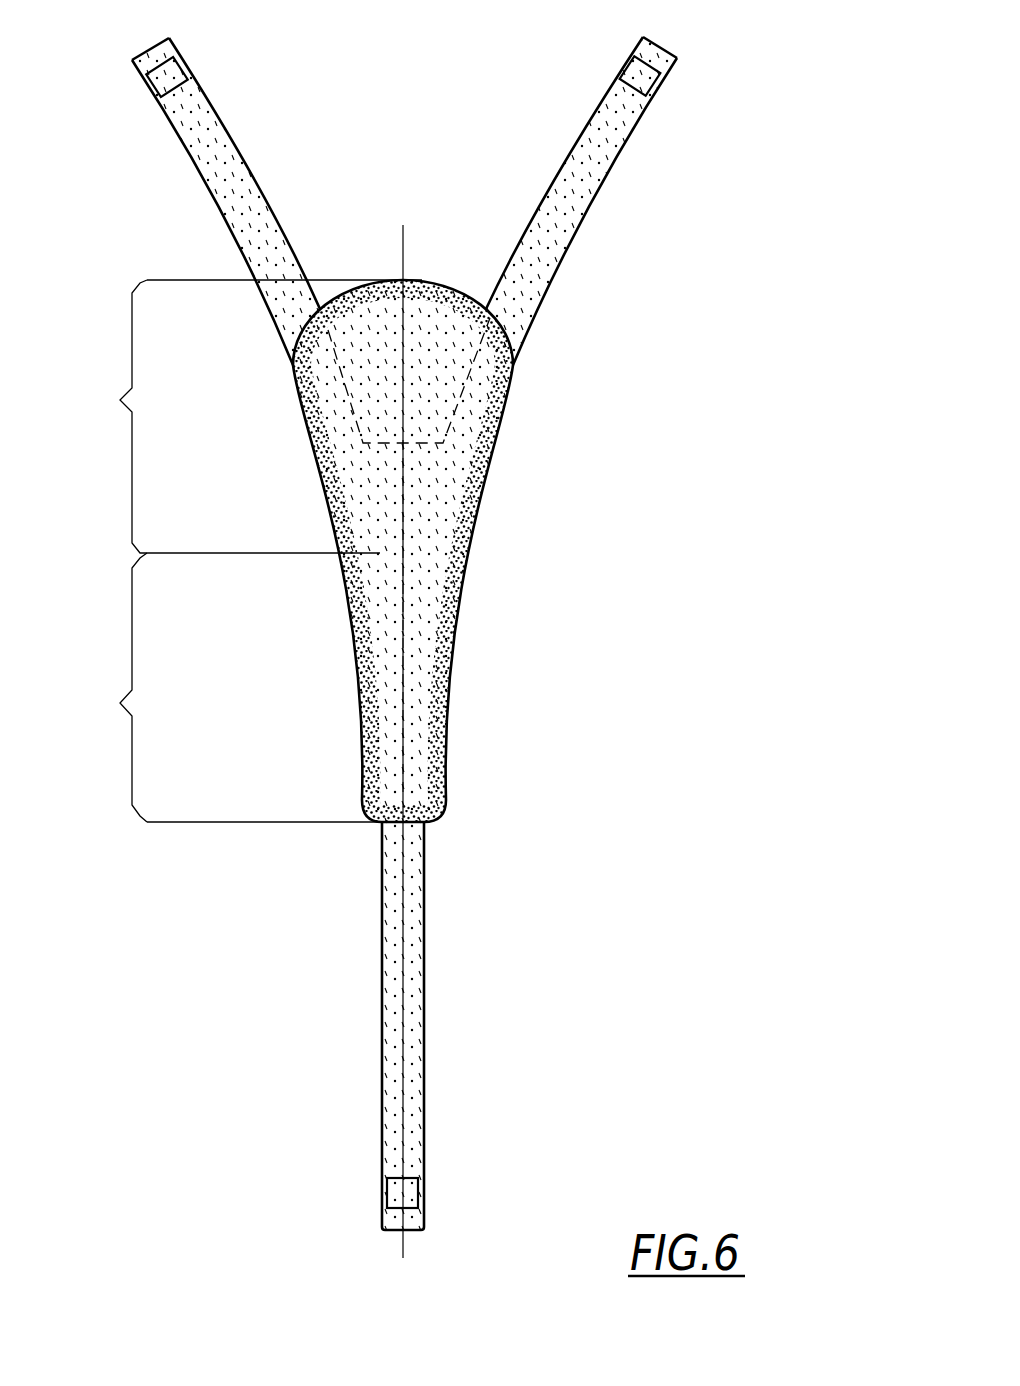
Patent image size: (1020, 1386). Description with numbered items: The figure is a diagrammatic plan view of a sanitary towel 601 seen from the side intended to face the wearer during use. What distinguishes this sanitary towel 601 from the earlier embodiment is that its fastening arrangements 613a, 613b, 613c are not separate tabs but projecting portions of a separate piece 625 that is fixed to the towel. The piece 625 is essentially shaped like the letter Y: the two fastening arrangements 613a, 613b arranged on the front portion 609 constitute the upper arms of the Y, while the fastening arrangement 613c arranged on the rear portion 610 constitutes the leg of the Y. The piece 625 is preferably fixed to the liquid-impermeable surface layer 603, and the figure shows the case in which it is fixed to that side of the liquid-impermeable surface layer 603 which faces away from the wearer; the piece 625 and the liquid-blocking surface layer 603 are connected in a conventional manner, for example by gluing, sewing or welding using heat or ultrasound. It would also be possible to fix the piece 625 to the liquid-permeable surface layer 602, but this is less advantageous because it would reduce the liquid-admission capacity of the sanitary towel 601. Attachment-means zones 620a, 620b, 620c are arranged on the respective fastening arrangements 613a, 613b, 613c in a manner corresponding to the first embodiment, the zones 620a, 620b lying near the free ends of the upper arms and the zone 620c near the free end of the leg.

The sanitary towel 601 is at (463, 629).
The liquid-permeable surface layer 602 is at (457, 477).
The liquid-impermeable surface layer 603 is at (450, 506).
The front portion 609 is at (110, 403).
The rear portion 610 is at (110, 705).
The fastening arrangement 613a is at (625, 201).
The fastening arrangement 613b is at (190, 201).
The fastening arrangement 613c is at (510, 1026).
The attachment-means zone 620a is at (661, 83).
The attachment-means zone 620b is at (148, 84).
The attachment-means zone 620c is at (418, 1190).
The separate piece 625 is at (450, 555).